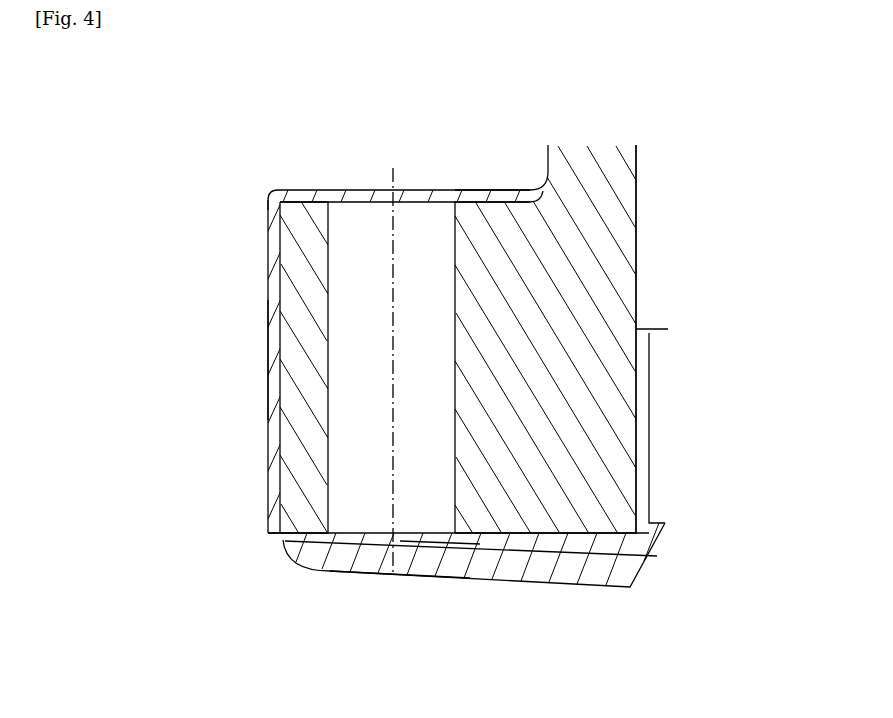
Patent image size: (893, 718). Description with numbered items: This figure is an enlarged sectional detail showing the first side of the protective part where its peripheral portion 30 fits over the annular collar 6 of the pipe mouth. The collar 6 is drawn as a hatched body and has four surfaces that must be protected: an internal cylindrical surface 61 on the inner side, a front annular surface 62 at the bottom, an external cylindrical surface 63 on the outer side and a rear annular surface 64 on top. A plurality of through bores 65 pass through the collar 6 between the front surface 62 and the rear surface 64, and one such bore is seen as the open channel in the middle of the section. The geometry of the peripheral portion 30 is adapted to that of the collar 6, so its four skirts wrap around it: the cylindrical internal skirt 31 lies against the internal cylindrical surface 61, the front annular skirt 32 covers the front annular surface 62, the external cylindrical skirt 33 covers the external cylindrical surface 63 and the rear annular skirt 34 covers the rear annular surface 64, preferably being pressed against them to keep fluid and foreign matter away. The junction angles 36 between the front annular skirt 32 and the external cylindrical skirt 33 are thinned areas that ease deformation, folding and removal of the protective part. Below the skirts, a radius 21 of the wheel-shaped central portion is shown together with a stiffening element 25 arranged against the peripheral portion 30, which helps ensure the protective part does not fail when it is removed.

The peripheral portion 30 is at (210, 224).
The rear annular skirt 34 is at (355, 190).
The rear annular surface 64 is at (481, 197).
The junction angle 36 is at (268, 195).
The external cylindrical skirt 33 is at (270, 428).
The external cylindrical surface 63 is at (277, 357).
The annular collar 6 is at (300, 327).
The through bore 65 is at (403, 228).
The internal cylindrical surface 61 is at (637, 360).
The cylindrical internal skirt 31 is at (645, 438).
The radius 21 is at (655, 580).
The front annular skirt 32 is at (540, 540).
The front annular surface 62 is at (478, 538).
The stiffening element 25 is at (405, 573).